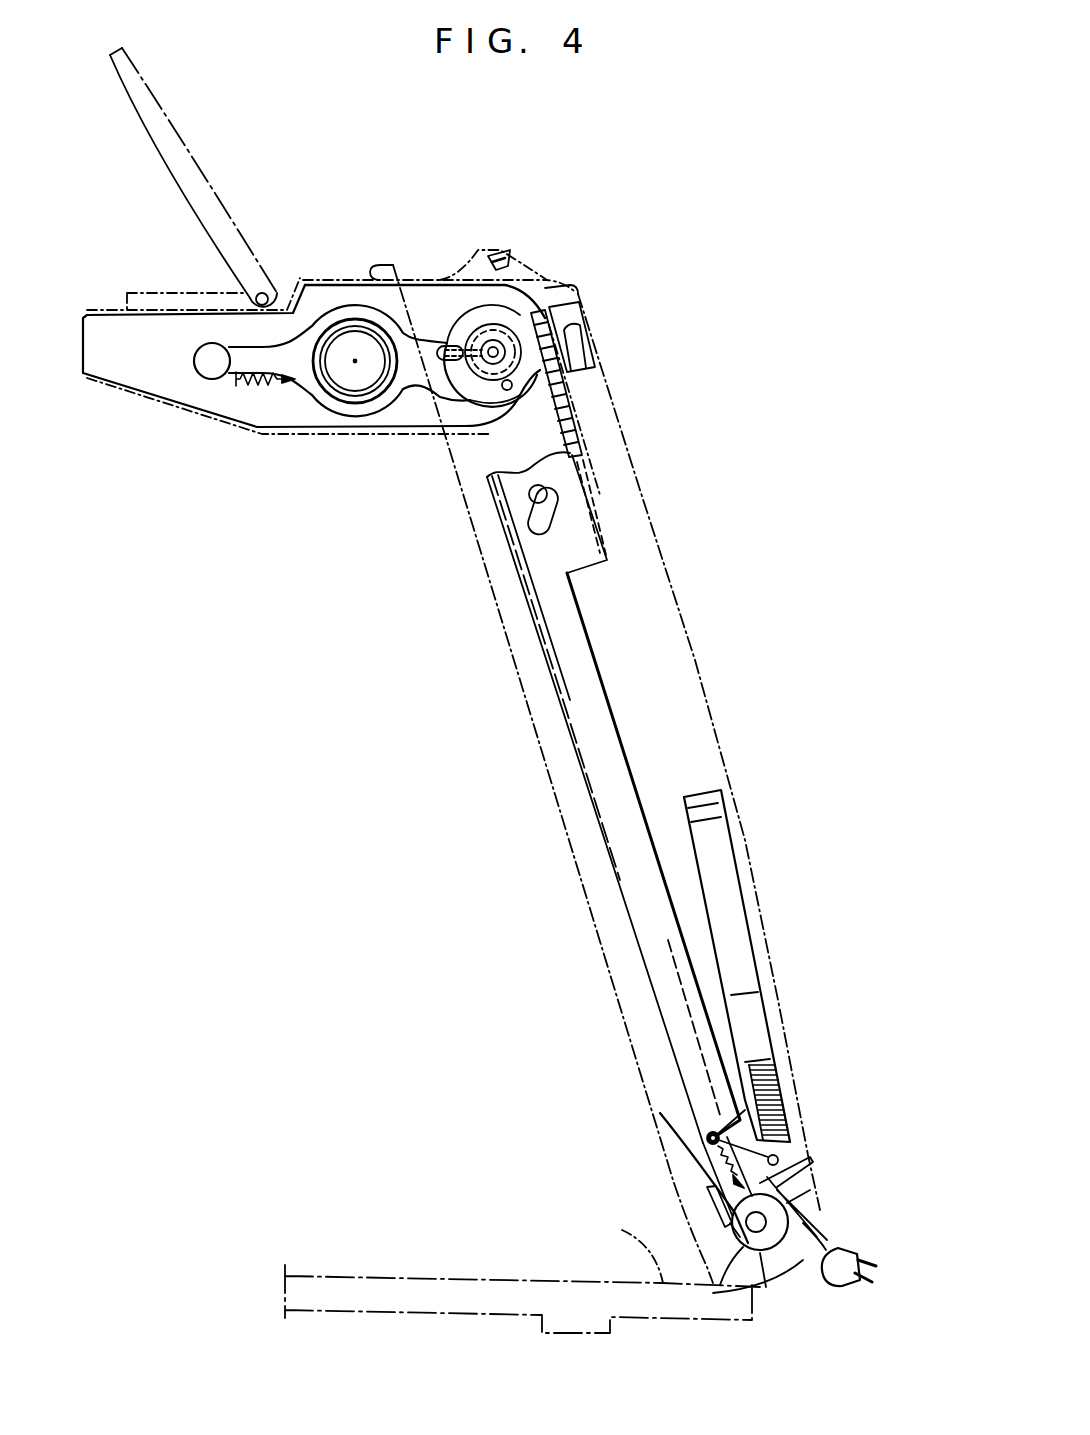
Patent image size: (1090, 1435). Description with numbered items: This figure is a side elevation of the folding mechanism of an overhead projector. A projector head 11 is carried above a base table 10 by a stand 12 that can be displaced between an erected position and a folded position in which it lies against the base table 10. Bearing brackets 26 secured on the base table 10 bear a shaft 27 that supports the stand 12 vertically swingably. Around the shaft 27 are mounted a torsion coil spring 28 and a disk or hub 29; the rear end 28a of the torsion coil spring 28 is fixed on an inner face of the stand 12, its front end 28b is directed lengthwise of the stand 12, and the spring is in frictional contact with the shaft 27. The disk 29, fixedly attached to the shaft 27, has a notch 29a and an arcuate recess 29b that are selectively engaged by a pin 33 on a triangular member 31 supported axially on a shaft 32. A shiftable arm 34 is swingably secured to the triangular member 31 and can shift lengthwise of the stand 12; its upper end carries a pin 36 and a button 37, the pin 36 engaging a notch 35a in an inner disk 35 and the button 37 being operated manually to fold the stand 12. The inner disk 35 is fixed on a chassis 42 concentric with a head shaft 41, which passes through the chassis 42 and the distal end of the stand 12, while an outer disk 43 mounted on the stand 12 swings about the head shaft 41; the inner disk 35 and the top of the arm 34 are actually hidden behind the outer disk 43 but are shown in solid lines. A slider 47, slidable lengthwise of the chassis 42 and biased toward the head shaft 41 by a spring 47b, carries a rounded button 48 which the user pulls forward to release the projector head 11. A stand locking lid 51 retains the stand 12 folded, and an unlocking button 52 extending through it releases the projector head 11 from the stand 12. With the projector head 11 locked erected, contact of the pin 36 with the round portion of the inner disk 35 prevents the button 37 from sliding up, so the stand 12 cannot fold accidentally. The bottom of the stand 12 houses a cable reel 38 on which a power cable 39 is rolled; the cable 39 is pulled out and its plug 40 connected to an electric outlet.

The base table 10 is at (318, 1275).
The projector head 11 is at (288, 262).
The stand 12 is at (668, 518).
The bearing brackets 26 is at (620, 1244).
The shaft 27 is at (808, 1158).
The torsion coil spring 28 is at (698, 1206).
The rear end of the torsion coil spring 28a is at (785, 1292).
The front end of the torsion coil spring 28b is at (705, 1185).
The disk or hub 29 is at (808, 1165).
The notch 29a is at (760, 1255).
The arcuate recess 29b is at (743, 1247).
The triangular member 31 is at (748, 1110).
The shaft 32 is at (777, 1130).
The pin 33 is at (705, 1135).
The shiftable arm 34 is at (636, 714).
The inner disk or hub 35 is at (497, 343).
The notch 35a is at (458, 335).
The pin 36 is at (470, 397).
The button 37 is at (578, 320).
The cable reel 38 is at (742, 820).
The power cable 39 is at (802, 1228).
The plug 40 is at (852, 1256).
The head shaft 41 is at (465, 334).
The chassis 42 is at (137, 370).
The outer hub or disk 43 is at (585, 370).
The slider 47 is at (334, 307).
The spring 47b is at (273, 384).
The rounded button 48 is at (208, 374).
The stand locking lid 51 is at (477, 230).
The unlocking button 52 is at (505, 250).